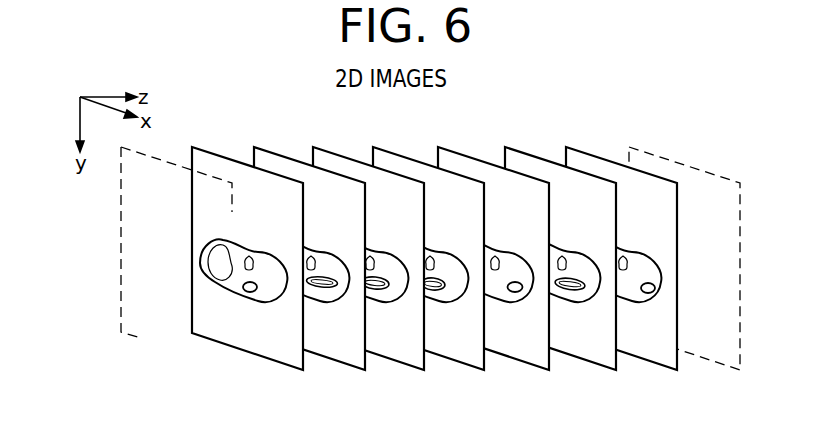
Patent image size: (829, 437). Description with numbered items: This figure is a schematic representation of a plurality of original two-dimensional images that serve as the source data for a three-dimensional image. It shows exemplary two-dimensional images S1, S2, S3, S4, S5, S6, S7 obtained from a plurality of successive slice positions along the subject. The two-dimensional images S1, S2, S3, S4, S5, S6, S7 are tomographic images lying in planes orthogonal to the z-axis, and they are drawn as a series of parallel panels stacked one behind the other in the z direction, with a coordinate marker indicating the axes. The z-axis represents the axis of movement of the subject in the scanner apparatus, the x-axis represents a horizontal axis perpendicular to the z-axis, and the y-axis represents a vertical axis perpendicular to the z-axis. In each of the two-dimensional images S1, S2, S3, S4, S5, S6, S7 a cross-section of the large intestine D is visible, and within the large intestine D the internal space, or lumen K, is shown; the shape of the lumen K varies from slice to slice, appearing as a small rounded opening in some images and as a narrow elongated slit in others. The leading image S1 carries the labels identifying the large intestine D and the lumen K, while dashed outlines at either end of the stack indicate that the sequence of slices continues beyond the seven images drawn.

The two-dimensional image S1 is at (177, 247).
The two-dimensional image S2 is at (309, 286).
The two-dimensional image S3 is at (368, 233).
The two-dimensional image S4 is at (428, 285).
The two-dimensional image S5 is at (493, 233).
The two-dimensional image S6 is at (560, 285).
The two-dimensional image S7 is at (621, 233).
The large intestine D is at (56, 287).
The lumen K is at (250, 340).